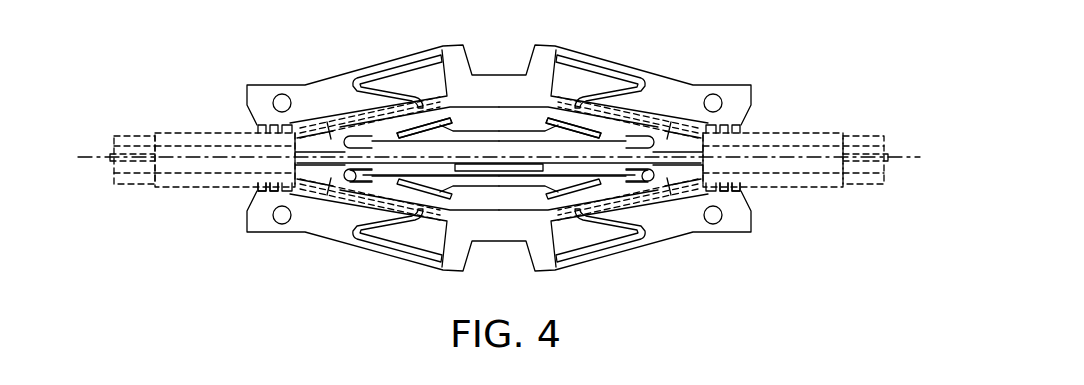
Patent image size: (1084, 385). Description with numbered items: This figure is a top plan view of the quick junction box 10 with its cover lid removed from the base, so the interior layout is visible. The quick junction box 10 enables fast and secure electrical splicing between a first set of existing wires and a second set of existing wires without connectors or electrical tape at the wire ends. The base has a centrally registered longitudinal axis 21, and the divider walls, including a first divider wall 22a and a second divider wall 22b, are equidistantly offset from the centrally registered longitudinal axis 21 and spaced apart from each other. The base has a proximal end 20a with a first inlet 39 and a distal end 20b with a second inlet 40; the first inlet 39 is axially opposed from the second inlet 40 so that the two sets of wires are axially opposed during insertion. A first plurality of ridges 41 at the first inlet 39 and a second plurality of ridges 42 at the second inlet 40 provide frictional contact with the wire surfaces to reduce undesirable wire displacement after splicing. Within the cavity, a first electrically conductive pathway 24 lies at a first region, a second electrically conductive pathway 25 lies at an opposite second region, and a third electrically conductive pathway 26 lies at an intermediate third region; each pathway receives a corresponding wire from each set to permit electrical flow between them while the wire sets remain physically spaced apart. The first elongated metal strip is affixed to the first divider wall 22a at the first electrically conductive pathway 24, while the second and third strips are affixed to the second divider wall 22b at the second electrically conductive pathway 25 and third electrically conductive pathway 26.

The quick junction box 10 is at (237, 269).
The centrally registered longitudinal axis 21 is at (82, 157).
The proximal end 20a is at (258, 130).
The distal end 20b is at (740, 132).
The first divider wall 22a is at (504, 120).
The second divider wall 22b is at (503, 195).
The first electrically conductive pathway 24 is at (354, 115).
The second electrically conductive pathway 25 is at (360, 210).
The third electrically conductive pathway 26 is at (342, 155).
The first inlet 39 is at (245, 203).
The second inlet 40 is at (756, 203).
The first plurality of ridges 41 is at (270, 202).
The second plurality of ridges 42 is at (722, 193).